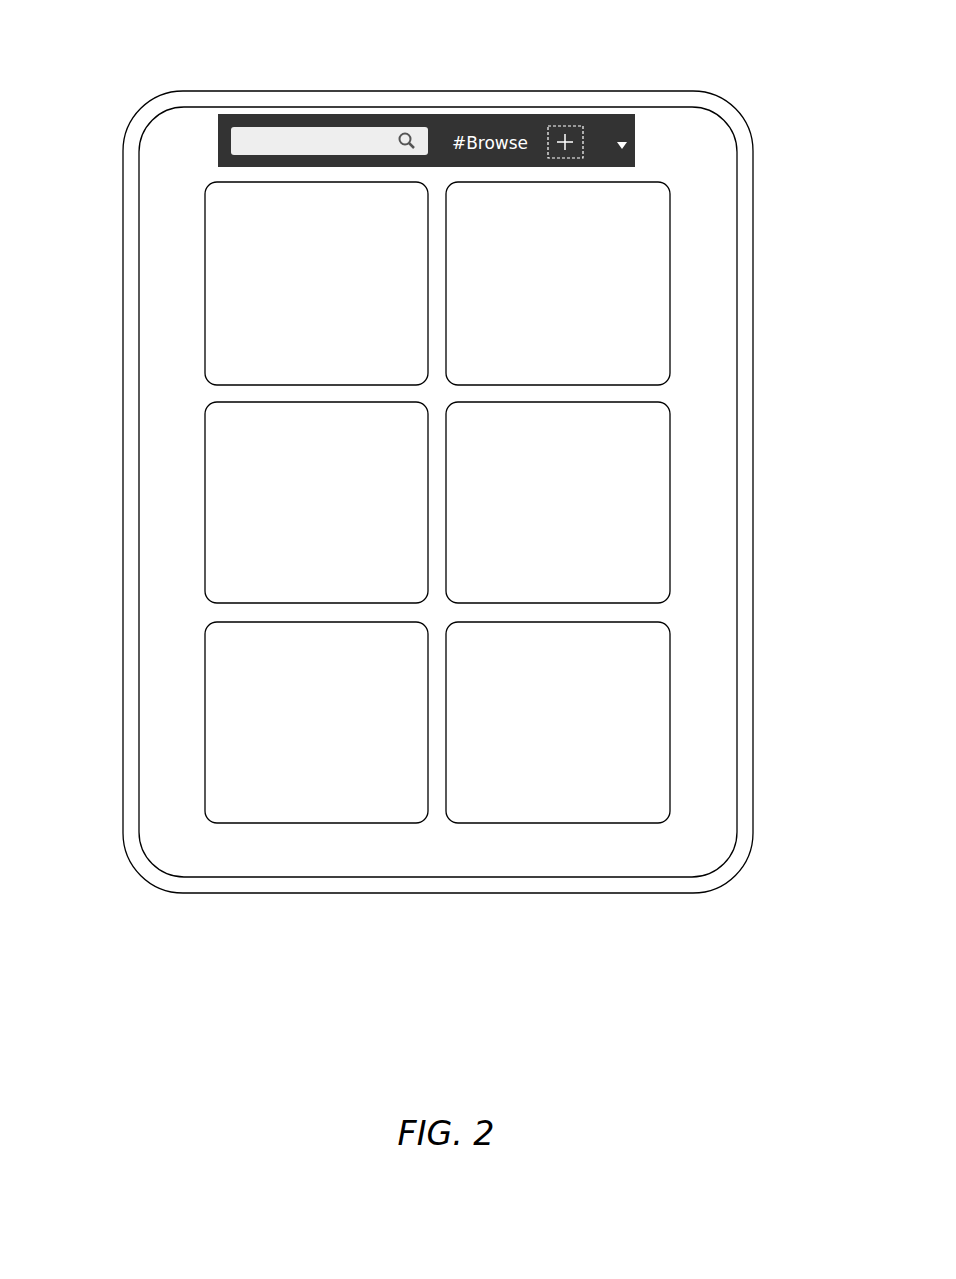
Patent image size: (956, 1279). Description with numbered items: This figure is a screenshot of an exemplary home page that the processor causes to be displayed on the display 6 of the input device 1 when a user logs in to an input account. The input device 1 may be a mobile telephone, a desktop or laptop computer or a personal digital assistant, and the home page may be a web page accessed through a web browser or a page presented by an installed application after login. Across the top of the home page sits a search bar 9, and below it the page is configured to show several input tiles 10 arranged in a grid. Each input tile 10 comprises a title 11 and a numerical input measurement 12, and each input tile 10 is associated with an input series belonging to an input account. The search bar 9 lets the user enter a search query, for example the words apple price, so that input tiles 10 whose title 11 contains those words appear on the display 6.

The input device 1 is at (217, 933).
The display 6 is at (689, 279).
The search bar 9 is at (362, 138).
The input tile 10 is at (446, 215).
The title 11 is at (617, 555).
The numerical input measurement 12 is at (630, 488).